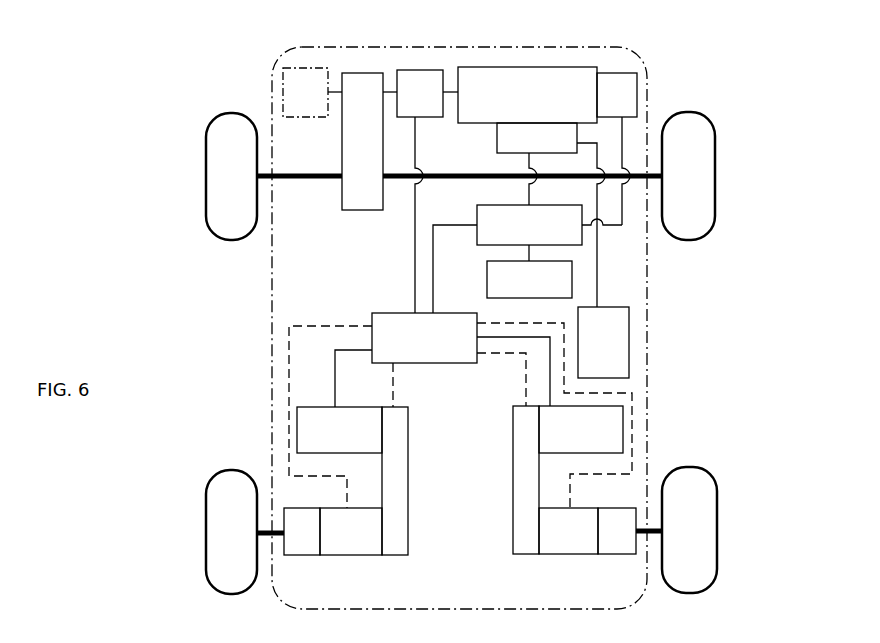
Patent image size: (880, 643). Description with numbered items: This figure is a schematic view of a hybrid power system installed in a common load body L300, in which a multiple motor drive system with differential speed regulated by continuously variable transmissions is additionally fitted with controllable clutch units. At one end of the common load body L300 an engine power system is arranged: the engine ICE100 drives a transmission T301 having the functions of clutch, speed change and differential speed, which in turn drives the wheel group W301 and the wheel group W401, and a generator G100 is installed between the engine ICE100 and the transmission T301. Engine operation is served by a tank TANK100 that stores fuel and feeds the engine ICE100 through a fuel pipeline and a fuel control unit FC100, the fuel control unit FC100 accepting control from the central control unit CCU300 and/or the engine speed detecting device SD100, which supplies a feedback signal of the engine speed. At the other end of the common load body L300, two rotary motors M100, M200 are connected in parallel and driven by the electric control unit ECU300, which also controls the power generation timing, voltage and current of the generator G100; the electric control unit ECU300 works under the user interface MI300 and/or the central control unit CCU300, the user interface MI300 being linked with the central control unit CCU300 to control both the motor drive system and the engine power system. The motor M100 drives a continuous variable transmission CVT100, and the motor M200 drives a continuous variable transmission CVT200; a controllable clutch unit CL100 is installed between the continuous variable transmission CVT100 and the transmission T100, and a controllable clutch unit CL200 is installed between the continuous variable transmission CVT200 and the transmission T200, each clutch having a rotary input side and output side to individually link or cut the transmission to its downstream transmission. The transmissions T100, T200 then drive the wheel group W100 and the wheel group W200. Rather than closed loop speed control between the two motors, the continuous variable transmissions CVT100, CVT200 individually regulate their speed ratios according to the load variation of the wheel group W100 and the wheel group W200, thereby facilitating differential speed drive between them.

The generator G100 is at (300, 95).
The engine speed detecting device SD100 is at (612, 93).
The wheel group W301 is at (203, 192).
The wheel group W401 is at (703, 191).
The wheel group W100 is at (205, 553).
The wheel group W200 is at (717, 548).
The transmission T301 is at (350, 198).
The engine ICE100 is at (527, 95).
The fuel control unit FC100 is at (551, 215).
The central control unit CCU300 is at (527, 259).
The user interface MI300 is at (529, 271).
The tank TANK100 is at (610, 342).
The electric control unit ECU300 is at (424, 338).
The common load body L300 is at (272, 350).
The motor M100 is at (339, 401).
The motor M200 is at (550, 395).
The continuous variable transmission CVT100 is at (443, 447).
The continuous variable transmission CVT200 is at (525, 509).
The transmission T100 is at (307, 540).
The controllable clutch unit CL100 is at (371, 545).
The controllable clutch unit CL200 is at (545, 548).
The transmission T200 is at (620, 546).